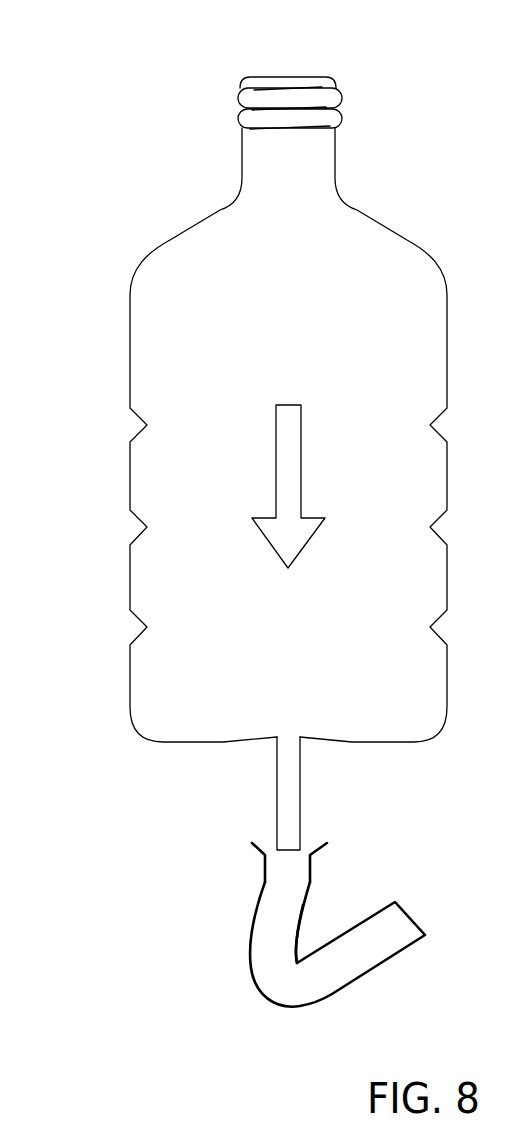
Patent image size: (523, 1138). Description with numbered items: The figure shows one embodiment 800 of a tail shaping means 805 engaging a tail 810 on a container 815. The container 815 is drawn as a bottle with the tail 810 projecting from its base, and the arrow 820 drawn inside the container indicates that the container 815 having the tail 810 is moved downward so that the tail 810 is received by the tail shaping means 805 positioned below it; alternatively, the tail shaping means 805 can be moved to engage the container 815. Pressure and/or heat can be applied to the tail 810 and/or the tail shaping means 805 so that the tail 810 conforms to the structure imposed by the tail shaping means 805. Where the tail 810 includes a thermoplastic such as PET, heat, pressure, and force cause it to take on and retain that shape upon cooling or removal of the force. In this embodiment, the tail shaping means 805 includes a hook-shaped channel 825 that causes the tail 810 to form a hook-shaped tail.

The embodiment 800 is at (143, 44).
The tail shaping means 805 is at (252, 925).
The tail 810 is at (277, 793).
The container 815 is at (130, 352).
The arrow 820 is at (276, 483).
The hook-shaped channel 825 is at (307, 987).